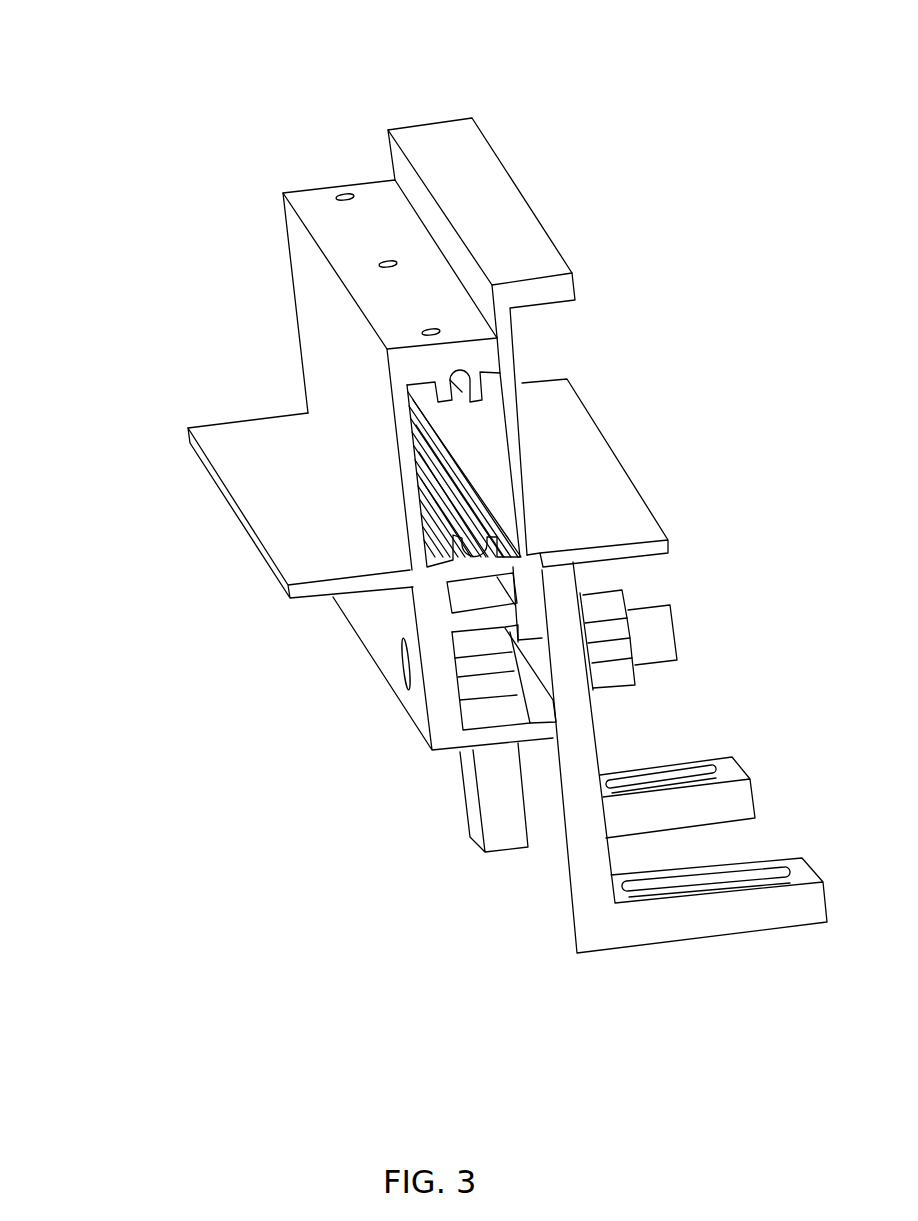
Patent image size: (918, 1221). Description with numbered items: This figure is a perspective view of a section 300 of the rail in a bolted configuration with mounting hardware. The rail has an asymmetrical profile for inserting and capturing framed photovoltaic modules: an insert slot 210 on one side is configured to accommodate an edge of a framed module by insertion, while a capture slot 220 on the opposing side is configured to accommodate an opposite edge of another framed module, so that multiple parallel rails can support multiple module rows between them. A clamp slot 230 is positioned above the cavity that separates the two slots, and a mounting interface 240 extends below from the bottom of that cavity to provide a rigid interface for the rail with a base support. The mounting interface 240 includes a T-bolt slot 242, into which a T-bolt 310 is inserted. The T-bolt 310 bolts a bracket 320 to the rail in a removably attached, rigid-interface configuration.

The section 300 is at (693, 66).
The insert slot 210 is at (670, 515).
The capture slot 220 is at (140, 197).
The clamp slot 230 is at (262, 153).
The mounting interface 240 is at (703, 520).
The T-bolt slot 242 is at (508, 717).
The T-bolt 310 is at (623, 668).
The bracket 320 is at (673, 922).